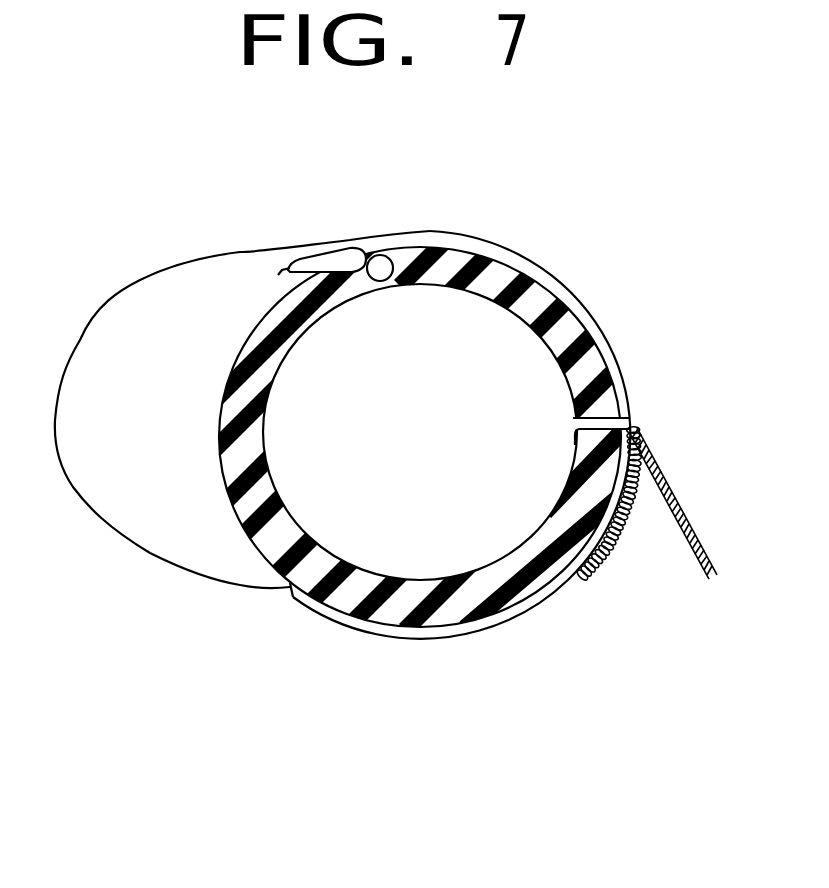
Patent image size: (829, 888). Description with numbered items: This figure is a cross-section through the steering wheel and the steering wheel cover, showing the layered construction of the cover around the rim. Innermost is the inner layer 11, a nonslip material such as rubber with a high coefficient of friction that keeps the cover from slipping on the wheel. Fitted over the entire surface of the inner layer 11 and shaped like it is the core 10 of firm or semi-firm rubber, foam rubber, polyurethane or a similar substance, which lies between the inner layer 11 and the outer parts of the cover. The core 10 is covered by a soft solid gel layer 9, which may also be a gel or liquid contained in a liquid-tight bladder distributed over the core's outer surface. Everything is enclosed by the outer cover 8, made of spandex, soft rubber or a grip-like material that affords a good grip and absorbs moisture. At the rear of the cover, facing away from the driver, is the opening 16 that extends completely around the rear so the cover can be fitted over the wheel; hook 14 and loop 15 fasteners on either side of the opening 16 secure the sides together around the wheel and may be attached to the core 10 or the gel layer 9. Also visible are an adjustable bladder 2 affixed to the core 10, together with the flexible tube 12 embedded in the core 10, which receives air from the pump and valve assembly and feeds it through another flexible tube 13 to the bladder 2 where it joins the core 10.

The adjustable bladder 2 is at (152, 387).
The outer cover 8 is at (520, 253).
The gel layer 9 is at (593, 337).
The core 10 is at (467, 600).
The inner layer 11 is at (358, 572).
The flexible tube 12 is at (383, 265).
The other flexible tube 13 is at (297, 268).
The hook fastener 14 is at (687, 545).
The loop fastener 15 is at (613, 553).
The opening 16 is at (605, 423).